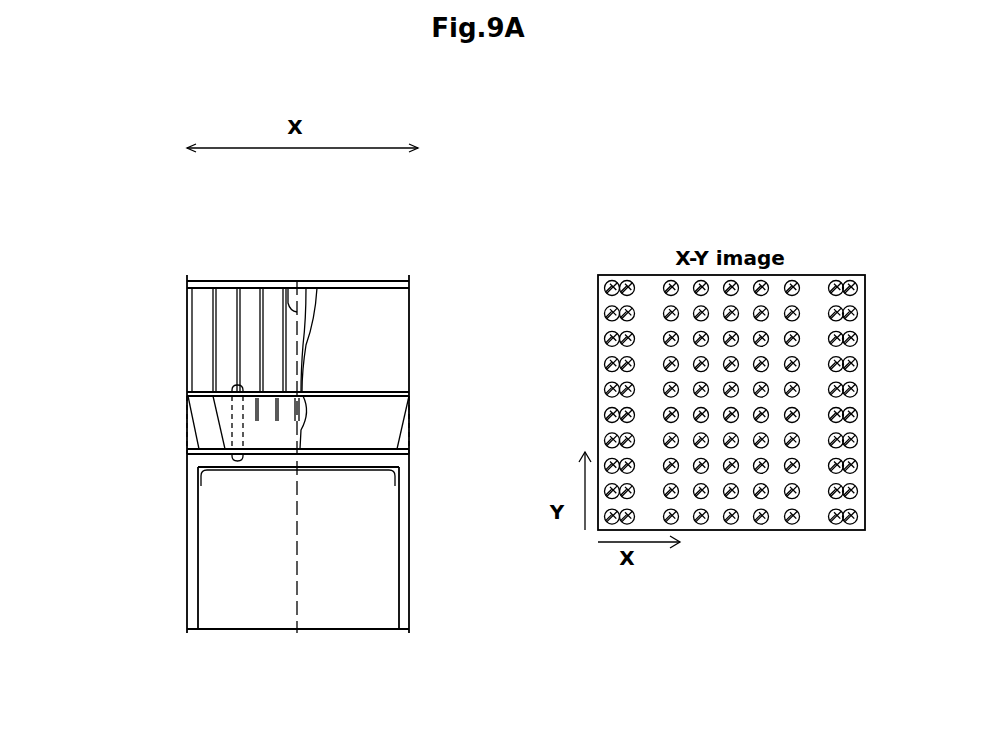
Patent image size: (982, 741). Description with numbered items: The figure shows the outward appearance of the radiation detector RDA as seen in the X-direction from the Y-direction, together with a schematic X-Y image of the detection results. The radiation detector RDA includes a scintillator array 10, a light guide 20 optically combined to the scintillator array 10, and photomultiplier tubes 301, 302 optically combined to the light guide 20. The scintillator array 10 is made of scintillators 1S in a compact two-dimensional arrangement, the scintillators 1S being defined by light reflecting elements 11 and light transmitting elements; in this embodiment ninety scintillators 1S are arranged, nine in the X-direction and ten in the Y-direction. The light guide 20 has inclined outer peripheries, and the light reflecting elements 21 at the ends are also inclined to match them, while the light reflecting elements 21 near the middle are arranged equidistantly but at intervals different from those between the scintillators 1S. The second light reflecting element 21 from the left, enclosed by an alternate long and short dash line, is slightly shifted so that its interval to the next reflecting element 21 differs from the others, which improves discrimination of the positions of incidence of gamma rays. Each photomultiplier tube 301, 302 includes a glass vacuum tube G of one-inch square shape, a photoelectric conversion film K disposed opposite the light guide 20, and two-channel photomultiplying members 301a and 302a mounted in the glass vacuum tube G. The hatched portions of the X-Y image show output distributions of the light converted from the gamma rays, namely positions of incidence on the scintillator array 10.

The radiation detector RDA is at (185, 368).
The scintillator array 10 is at (412, 373).
The scintillator 1S is at (200, 318).
The light reflecting element 11 is at (295, 283).
The light guide 20 is at (385, 418).
The light reflecting element 21 is at (220, 432).
The glass vacuum tube G is at (410, 562).
The photoelectric conversion film K is at (357, 472).
The photomultiplier tube 301 is at (335, 633).
The photomultiplying member 301a is at (362, 617).
The photomultiplier tube 302 is at (233, 633).
The photomultiplying member 302a is at (210, 582).